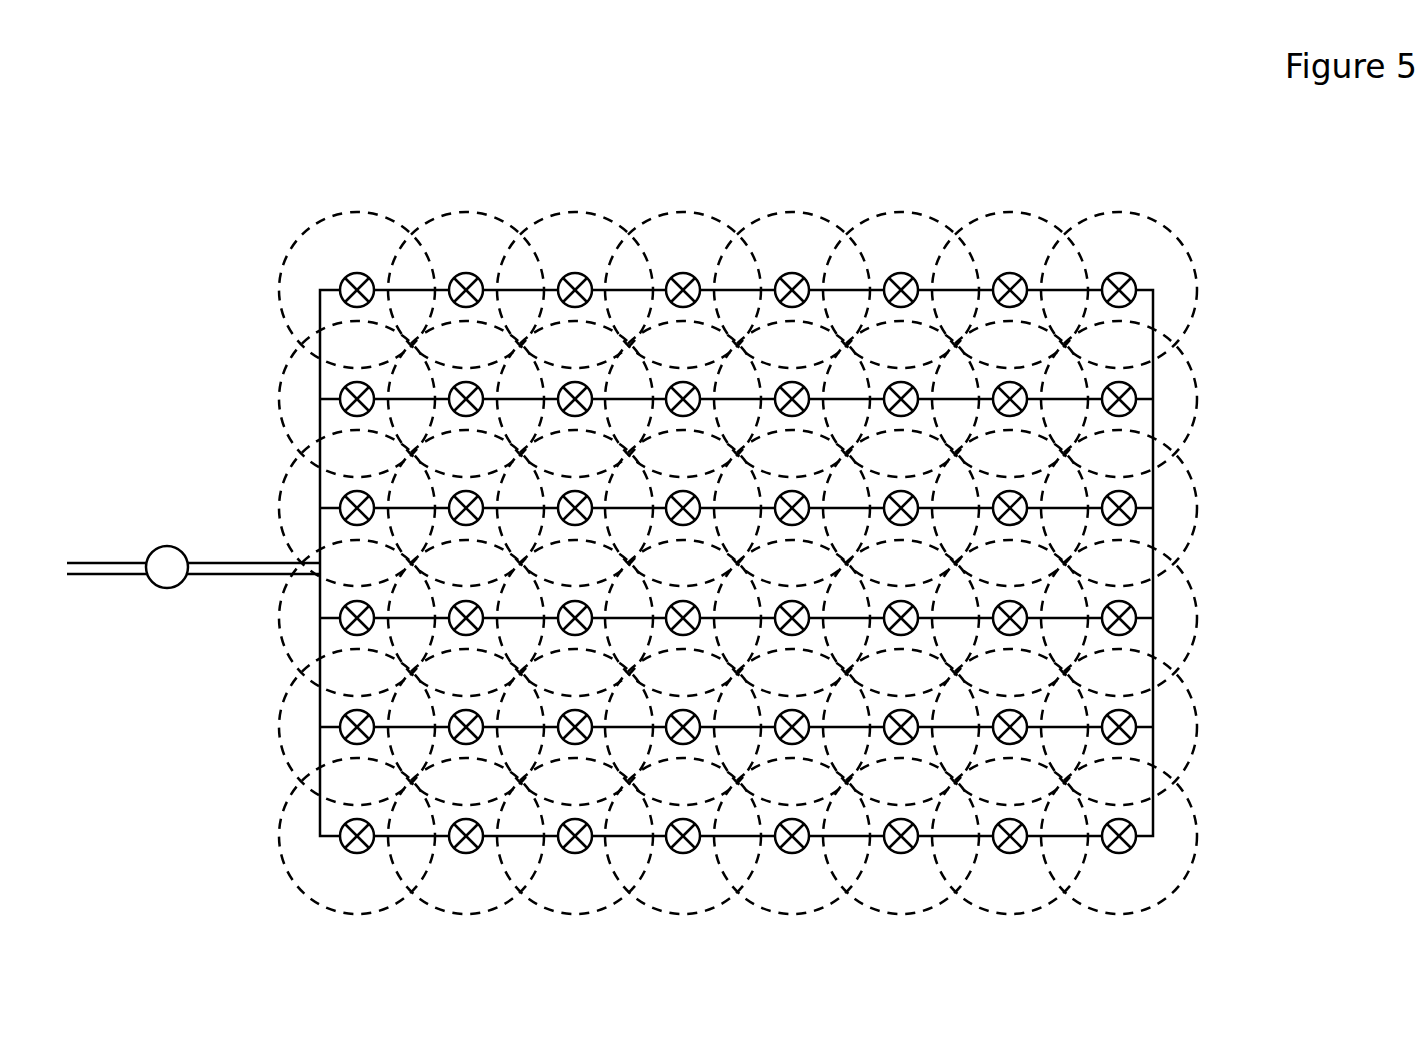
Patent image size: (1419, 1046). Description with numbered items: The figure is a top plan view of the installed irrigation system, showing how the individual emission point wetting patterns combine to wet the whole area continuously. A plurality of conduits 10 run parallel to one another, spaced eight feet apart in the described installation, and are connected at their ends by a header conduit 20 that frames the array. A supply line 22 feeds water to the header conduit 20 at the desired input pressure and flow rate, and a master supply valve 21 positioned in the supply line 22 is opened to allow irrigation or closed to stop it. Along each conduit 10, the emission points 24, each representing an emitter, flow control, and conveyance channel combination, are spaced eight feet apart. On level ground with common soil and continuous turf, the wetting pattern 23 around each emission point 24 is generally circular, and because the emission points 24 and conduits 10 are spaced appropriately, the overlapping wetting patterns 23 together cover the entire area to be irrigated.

The conduit 10 is at (1150, 400).
The header conduit 20 is at (320, 380).
The master supply valve 21 is at (175, 588).
The supply line 22 is at (265, 562).
The wetting pattern 23 is at (860, 227).
The emission point 24 is at (362, 276).